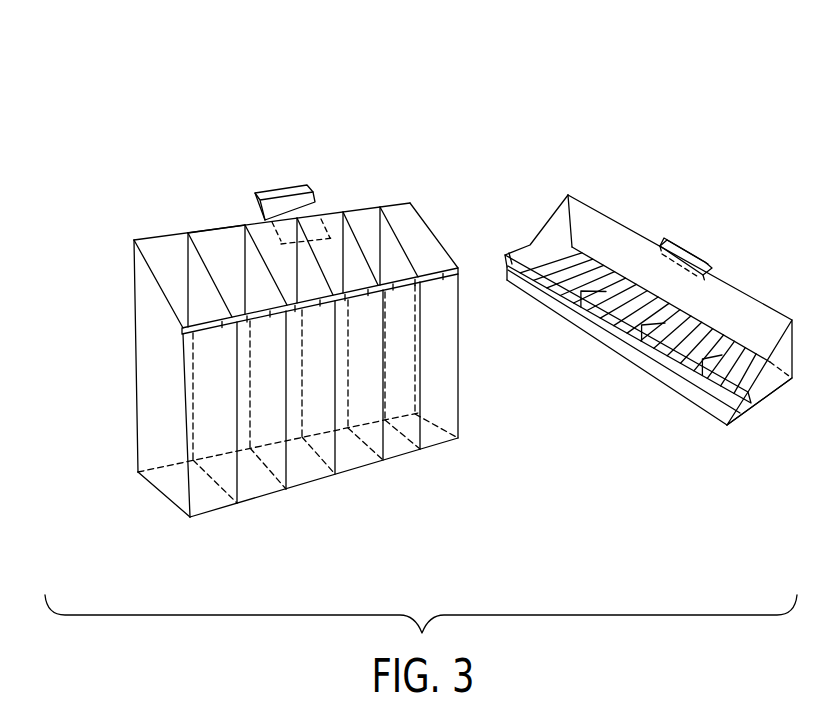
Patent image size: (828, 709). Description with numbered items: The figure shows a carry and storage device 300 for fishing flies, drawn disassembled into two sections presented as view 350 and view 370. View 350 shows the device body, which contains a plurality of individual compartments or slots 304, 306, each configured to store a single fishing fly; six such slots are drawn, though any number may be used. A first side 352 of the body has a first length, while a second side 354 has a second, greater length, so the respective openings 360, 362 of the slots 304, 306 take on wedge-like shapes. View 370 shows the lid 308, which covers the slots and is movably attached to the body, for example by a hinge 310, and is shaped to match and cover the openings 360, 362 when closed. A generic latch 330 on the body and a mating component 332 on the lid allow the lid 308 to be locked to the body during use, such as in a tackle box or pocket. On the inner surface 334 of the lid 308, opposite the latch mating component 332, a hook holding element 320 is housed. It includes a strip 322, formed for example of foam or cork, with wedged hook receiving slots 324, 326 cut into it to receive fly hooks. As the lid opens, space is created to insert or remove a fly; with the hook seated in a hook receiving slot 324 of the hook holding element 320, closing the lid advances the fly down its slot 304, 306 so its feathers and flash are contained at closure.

The carry and storage device 300 is at (429, 106).
The compartment (slot) 304 is at (205, 516).
The compartment (slot) 306 is at (263, 483).
The lid 308 is at (548, 217).
The hinge 310 is at (463, 266).
The hook holding element 320 is at (720, 413).
The strip 322 is at (651, 393).
The hook receiving slot 324 is at (572, 278).
The hook receiving slot 326 is at (613, 290).
The latch 330 is at (273, 193).
The latch mating component 332 is at (692, 255).
The inner surface 334 is at (773, 377).
The view 350 is at (386, 526).
The first side 352 is at (476, 404).
The second side 354 is at (120, 355).
The opening 360 is at (157, 247).
The opening 362 is at (215, 240).
The view 370 is at (755, 446).